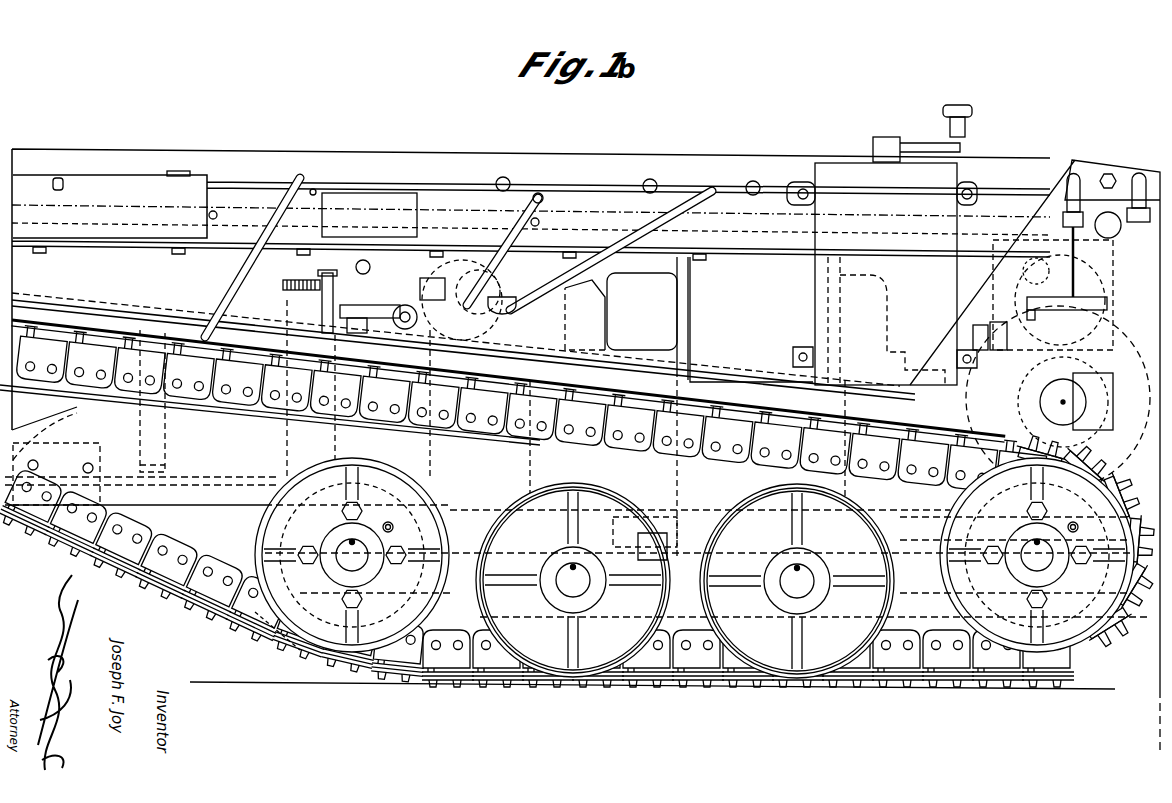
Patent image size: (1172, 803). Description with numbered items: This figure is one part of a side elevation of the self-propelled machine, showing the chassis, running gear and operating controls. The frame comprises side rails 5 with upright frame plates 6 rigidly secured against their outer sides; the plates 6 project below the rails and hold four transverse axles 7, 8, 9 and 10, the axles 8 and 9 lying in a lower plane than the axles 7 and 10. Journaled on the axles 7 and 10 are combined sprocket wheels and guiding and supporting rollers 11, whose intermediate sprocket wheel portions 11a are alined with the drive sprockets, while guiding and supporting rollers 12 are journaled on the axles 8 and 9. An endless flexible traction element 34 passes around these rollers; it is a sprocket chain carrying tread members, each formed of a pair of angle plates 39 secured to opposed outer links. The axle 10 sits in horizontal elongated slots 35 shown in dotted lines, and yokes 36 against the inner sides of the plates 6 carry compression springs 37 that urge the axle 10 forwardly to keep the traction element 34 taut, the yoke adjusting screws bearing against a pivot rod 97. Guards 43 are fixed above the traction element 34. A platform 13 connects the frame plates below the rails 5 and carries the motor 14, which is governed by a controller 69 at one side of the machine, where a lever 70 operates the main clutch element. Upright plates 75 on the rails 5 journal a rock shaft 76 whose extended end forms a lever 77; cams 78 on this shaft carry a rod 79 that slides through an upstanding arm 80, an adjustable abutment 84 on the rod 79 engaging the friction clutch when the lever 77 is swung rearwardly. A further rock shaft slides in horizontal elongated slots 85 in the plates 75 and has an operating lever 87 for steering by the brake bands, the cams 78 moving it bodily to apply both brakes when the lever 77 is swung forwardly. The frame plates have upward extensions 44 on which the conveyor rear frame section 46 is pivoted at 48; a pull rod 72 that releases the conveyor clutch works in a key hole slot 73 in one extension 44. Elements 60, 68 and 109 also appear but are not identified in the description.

The lever 70 is at (199, 335).
The upstanding arm 80 is at (334, 272).
The adjustable abutment 84 is at (341, 300).
The lever 77 is at (469, 297).
The rear frame section 46 is at (600, 200).
The operating lever 87 is at (693, 197).
The upward extensions 44 is at (1071, 163).
The pivot 48 is at (1108, 217).
The rod 79 is at (371, 268).
The pivot rod 97 is at (432, 278).
The cams 78 is at (470, 276).
The rock shaft 76 is at (470, 320).
The horizontal elongated slots 85 is at (500, 314).
The upright plates 75 is at (585, 315).
The motor 14 is at (710, 319).
The guards 43 is at (716, 382).
The controller 69 is at (882, 245).
The coupling 60 is at (1000, 290).
The fan 68 is at (1036, 271).
The pull rod 72 is at (1053, 295).
The key hole slot 73 is at (1025, 312).
The gear 109 is at (1058, 398).
The angle plates 39 is at (137, 527).
The side rails 5 is at (212, 505).
The endless flexible traction element 34 is at (577, 503).
The platform 13 is at (653, 552).
The intermediate sprocket wheel portions 11a is at (1108, 636).
The transverse axle 7 is at (327, 600).
The combined sprocket wheels and guiding and supporting rollers 11 is at (958, 605).
The transverse axle 8 is at (573, 590).
The guiding and supporting rollers 12 is at (824, 652).
The upright frame plates 6 is at (682, 614).
The transverse axle 9 is at (795, 592).
The yokes 36 is at (920, 605).
The compression springs 37 is at (934, 605).
The transverse axle 10 is at (1034, 566).
The horizontal elongated slots 35 is at (1042, 562).